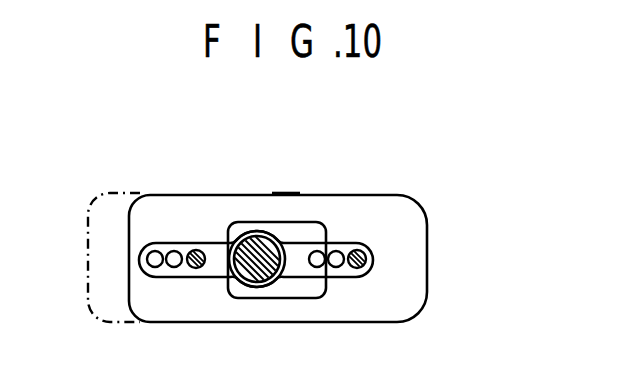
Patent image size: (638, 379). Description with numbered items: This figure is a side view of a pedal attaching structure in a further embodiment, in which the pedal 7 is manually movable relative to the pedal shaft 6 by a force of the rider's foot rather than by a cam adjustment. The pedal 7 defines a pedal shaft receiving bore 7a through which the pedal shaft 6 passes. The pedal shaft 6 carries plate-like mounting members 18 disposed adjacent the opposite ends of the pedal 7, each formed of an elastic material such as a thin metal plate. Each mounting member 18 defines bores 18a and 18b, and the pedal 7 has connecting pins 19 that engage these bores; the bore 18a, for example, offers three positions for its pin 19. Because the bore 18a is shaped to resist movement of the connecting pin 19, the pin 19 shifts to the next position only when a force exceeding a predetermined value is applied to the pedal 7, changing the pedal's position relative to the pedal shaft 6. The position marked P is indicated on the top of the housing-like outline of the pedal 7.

The pedal 7 is at (417, 228).
The pedal shaft receiving bore 7a is at (236, 300).
The pedal shaft 6 is at (257, 237).
The mounting member 18 is at (297, 266).
The bore 18a is at (340, 269).
The bore 18b is at (177, 265).
The connecting pin 19 is at (196, 251).
The pivot position P is at (273, 196).